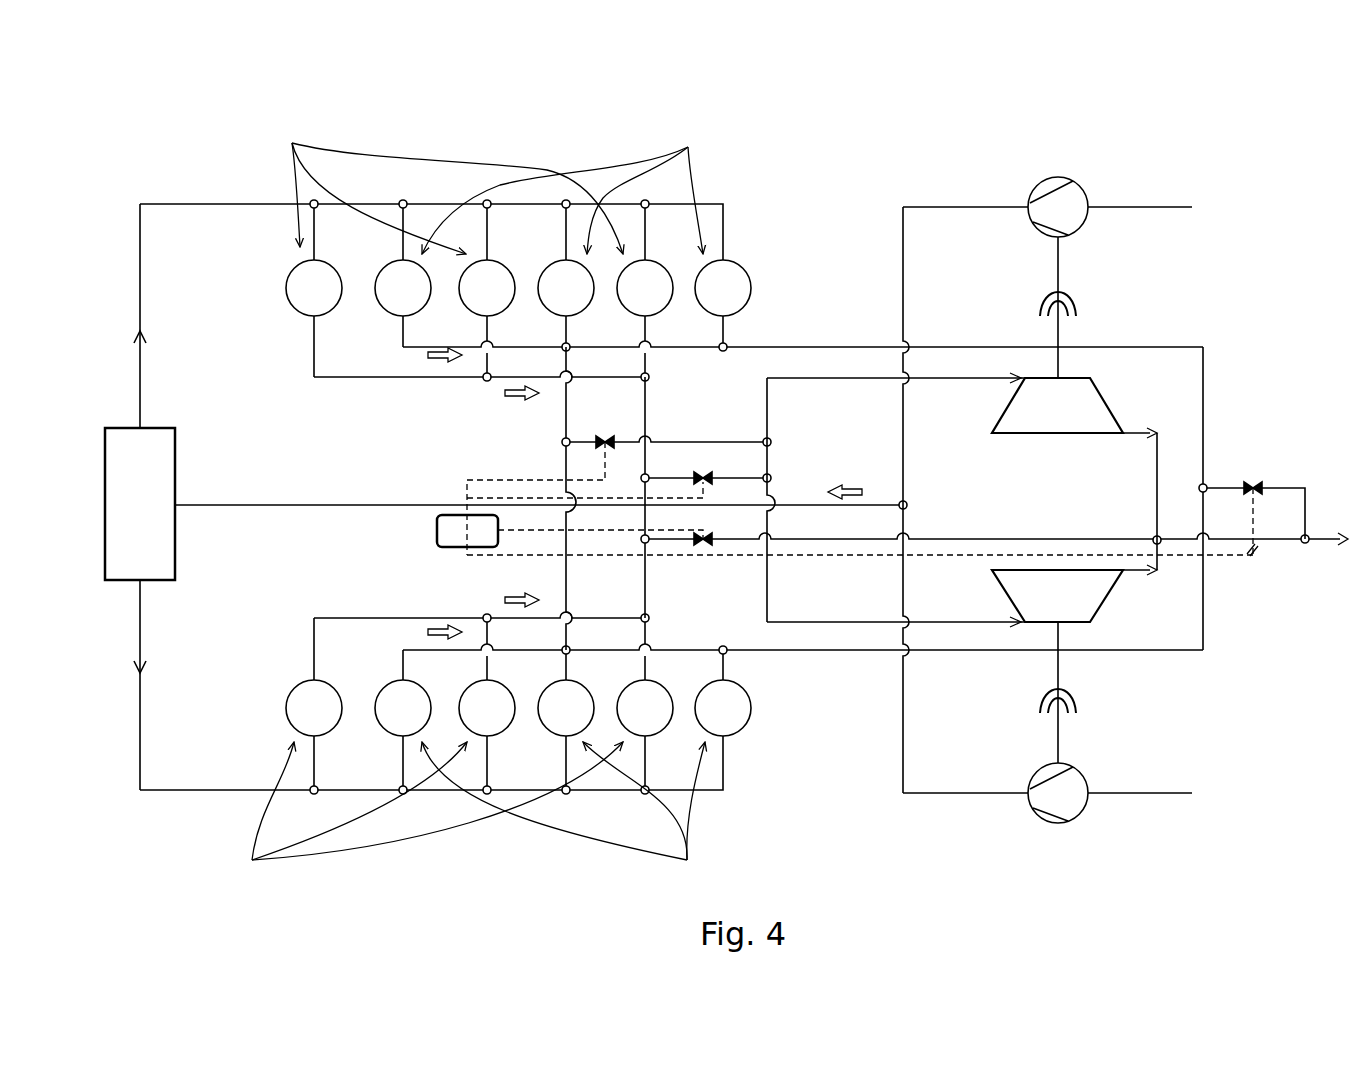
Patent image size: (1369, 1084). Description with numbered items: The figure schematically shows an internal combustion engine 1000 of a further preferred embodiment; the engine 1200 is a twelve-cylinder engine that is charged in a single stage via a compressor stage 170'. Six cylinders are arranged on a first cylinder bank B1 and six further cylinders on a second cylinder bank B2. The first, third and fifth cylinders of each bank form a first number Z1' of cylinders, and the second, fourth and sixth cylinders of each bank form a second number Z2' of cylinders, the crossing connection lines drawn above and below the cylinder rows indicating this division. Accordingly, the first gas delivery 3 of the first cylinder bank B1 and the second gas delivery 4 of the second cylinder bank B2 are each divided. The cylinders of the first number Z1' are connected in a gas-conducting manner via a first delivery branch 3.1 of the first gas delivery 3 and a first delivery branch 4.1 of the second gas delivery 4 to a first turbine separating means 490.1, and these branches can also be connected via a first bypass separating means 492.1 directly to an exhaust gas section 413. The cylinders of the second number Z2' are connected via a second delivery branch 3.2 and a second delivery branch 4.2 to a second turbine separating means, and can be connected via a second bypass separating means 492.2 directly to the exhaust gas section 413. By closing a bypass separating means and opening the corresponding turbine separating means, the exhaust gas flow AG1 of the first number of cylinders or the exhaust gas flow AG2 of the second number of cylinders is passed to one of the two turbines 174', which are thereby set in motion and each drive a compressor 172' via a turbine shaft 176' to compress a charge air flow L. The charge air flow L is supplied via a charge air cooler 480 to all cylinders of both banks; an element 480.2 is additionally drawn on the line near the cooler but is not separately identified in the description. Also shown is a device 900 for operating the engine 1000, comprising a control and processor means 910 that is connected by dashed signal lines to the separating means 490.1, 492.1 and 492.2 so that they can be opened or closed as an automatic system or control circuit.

The internal combustion engine 1000 is at (1210, 69).
The engine 1200 is at (628, 143).
The first gas delivery 3 is at (360, 412).
The first delivery branch of first gas delivery 3.1 is at (411, 381).
The second delivery branch of first gas delivery 3.2 is at (396, 341).
The second gas delivery 4 is at (352, 594).
The first delivery branch of second gas delivery 4.1 is at (412, 616).
The second delivery branch of second gas delivery 4.2 is at (396, 668).
The charge air cooler 480 is at (106, 462).
The valve 480.2 is at (603, 436).
The first turbine separating means 490.1 is at (705, 470).
The first bypass separating means 492.1 is at (706, 548).
The second bypass separating means 492.2 is at (1255, 480).
The exhaust gas section 413 is at (864, 539).
The device for operating internal combustion engine 900 is at (456, 500).
The control and processor means 910 is at (436, 530).
The charge air flow L is at (842, 484).
The exhaust gas flow AG1 is at (518, 395).
The exhaust gas flow AG2 is at (434, 365).
The compressor stage 170' is at (1047, 437).
The compressor 172' is at (1074, 515).
The turbine 174' is at (1074, 500).
The turbine shaft 176' is at (1087, 513).
The first cylinder bank B1 is at (786, 292).
The second cylinder bank B2 is at (788, 709).
The first number of cylinders Z1' is at (431, 504).
The second number of cylinders Z2' is at (563, 504).